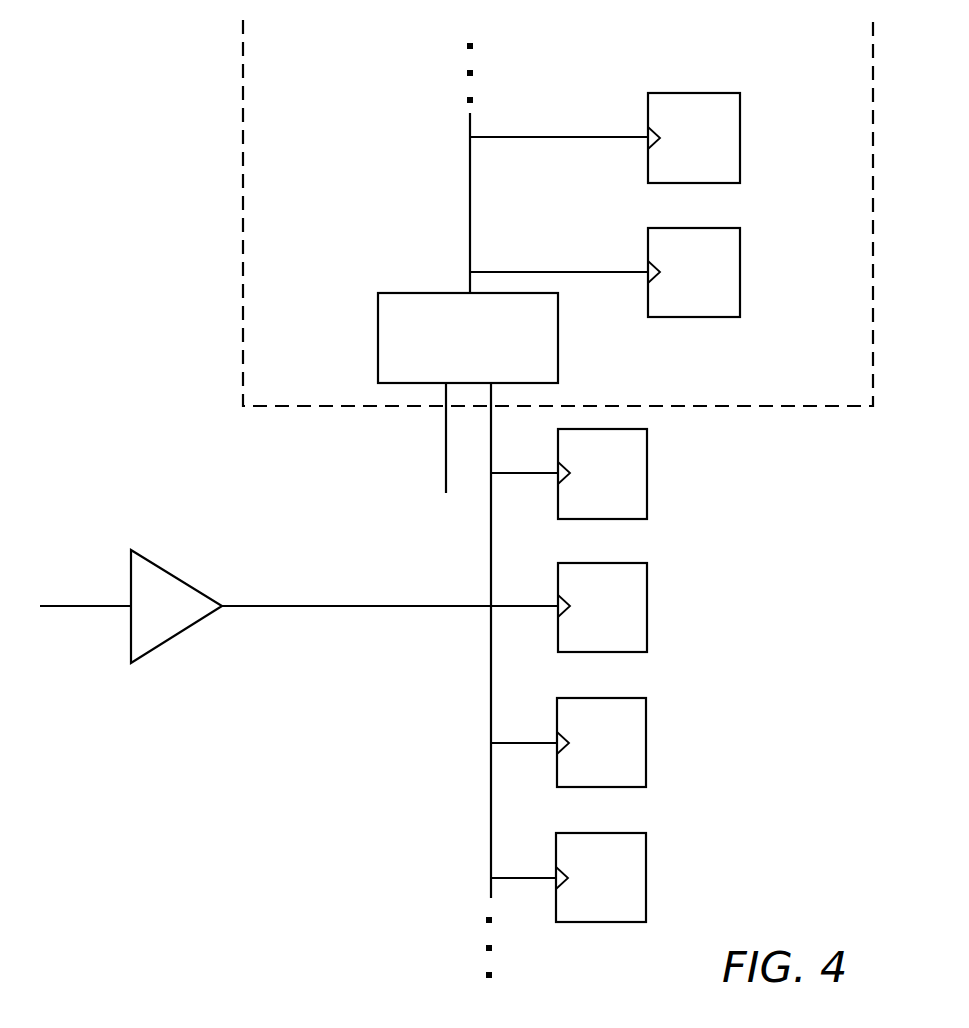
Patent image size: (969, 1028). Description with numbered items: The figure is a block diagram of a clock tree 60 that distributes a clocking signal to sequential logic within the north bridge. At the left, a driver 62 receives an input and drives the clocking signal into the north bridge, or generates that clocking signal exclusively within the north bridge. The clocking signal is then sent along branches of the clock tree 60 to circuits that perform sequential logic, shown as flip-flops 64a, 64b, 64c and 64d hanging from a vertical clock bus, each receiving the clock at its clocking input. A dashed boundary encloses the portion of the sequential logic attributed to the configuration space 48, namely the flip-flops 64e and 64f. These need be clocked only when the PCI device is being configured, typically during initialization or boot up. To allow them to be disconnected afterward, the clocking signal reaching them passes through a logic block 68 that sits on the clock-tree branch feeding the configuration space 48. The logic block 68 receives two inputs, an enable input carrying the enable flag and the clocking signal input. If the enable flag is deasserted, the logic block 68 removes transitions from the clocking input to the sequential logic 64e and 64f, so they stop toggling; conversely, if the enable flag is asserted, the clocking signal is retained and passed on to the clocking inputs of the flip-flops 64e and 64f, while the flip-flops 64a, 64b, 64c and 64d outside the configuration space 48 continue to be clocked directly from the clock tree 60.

The configuration space 48 is at (838, 67).
The clock tree 60 is at (285, 832).
The driver 62 is at (140, 620).
The logic block 68 is at (453, 364).
The flip-flop 64a is at (646, 877).
The flip-flop 64b is at (646, 741).
The flip-flop 64c is at (647, 605).
The flip-flop 64d is at (647, 470).
The sequential logic 64e is at (740, 272).
The sequential logic 64f is at (740, 138).